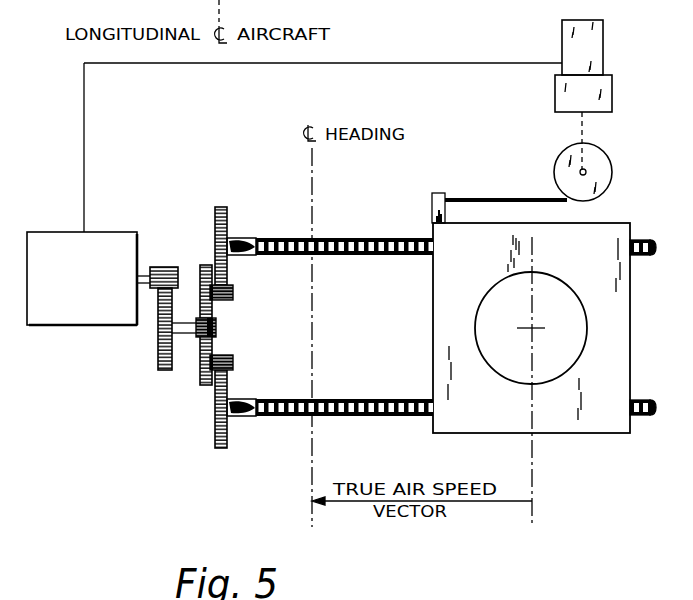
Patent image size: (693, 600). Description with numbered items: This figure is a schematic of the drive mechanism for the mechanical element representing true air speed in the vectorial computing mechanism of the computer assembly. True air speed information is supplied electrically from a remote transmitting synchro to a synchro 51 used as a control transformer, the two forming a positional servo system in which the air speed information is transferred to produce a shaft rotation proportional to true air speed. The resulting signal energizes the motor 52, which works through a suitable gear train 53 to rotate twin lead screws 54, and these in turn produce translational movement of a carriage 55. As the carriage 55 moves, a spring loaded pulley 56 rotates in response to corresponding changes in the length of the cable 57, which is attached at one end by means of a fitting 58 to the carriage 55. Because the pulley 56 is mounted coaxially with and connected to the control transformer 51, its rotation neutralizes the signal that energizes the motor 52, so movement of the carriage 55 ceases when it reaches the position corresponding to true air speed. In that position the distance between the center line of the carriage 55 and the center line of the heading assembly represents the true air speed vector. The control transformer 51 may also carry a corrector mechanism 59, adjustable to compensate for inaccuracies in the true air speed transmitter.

The synchro 51 is at (563, 50).
The motor 52 is at (108, 242).
The gear train 53 is at (184, 384).
The twin lead screws 54 is at (375, 257).
The carriage 55 is at (620, 348).
The spring loaded pulley 56 is at (600, 158).
The cable 57 is at (485, 197).
The fitting 58 is at (432, 208).
The corrector mechanism 59 is at (558, 98).